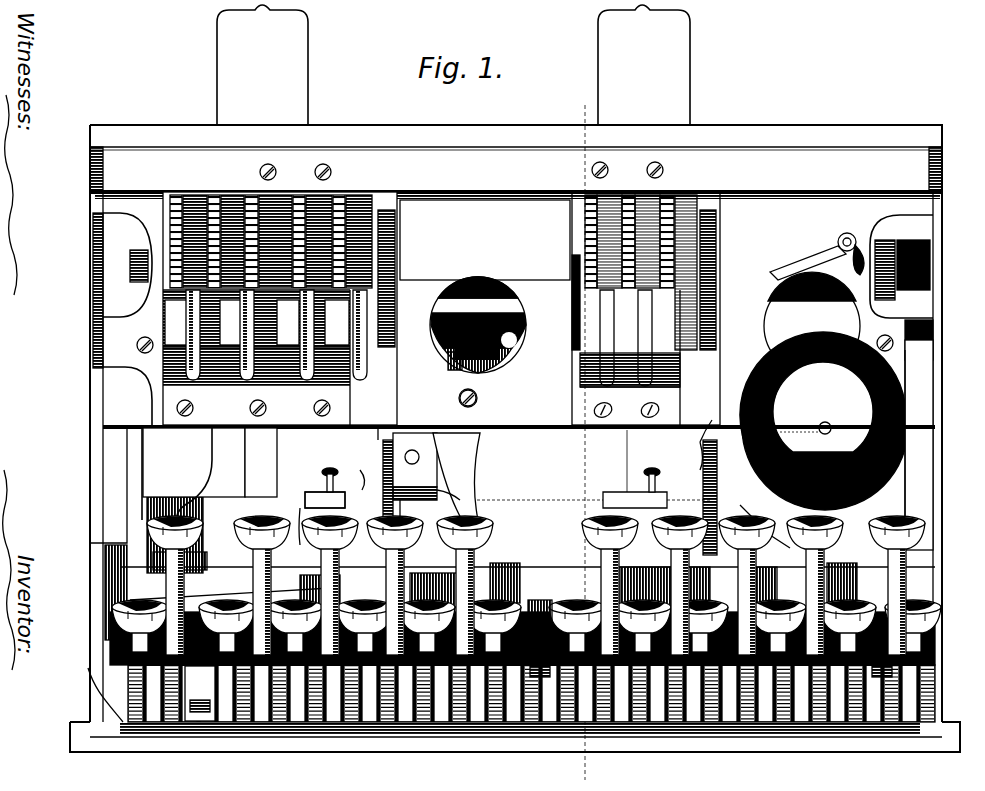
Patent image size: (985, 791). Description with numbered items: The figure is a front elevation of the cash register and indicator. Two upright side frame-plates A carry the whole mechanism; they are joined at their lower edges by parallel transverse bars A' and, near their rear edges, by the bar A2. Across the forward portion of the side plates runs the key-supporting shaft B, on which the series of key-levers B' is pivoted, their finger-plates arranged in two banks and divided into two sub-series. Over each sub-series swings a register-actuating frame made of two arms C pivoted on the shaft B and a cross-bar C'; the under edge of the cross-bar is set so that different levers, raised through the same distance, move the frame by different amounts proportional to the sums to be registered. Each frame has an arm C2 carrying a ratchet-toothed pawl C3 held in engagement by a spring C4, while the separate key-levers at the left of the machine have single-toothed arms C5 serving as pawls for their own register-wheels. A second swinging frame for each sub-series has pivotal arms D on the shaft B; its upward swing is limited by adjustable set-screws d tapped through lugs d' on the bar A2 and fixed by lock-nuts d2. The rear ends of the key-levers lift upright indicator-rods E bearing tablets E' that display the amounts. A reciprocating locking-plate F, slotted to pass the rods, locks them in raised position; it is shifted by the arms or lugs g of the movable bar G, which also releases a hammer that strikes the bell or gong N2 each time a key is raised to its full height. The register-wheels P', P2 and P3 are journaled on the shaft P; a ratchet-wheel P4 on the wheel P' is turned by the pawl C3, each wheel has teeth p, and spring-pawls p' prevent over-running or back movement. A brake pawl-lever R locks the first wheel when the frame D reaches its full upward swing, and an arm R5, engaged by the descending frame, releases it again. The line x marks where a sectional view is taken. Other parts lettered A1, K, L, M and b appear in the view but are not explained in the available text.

The side frame-plates A is at (509, 423).
The transverse bars A' is at (515, 748).
The front plate A1 is at (485, 240).
The bar A2 is at (519, 517).
The key-supporting shaft B is at (518, 667).
The key-levers B' is at (449, 719).
The arms C is at (526, 618).
The cross-bar C' is at (536, 585).
The arm C2 is at (360, 472).
The ratchet-toothed pawl C3 is at (378, 440).
The spring C4 is at (411, 440).
The upwardly-extending arm C5 is at (143, 483).
The pivotal arms D is at (540, 612).
The indicator-rods E is at (426, 464).
The indicator plates or tablets E' is at (446, 67).
The locking-plate F is at (515, 315).
The movable bar G is at (476, 370).
The arms or lugs g is at (446, 356).
The latch L is at (510, 356).
The cam lever M is at (462, 488).
The bell or gong N2 is at (836, 441).
The spring bracket K is at (658, 385).
The shaft P is at (478, 320).
The register-wheel P' is at (440, 297).
The register-wheel P2 is at (314, 200).
The register-wheel P3 is at (259, 200).
The ratchet-wheel P4 is at (393, 256).
The teeth p is at (440, 259).
The spring-pawls p' is at (448, 341).
The guide bar b is at (585, 220).
The set-screws d is at (476, 469).
The lock-nut d2 is at (318, 498).
The lugs d' is at (447, 519).
The pawl-lever R is at (420, 487).
The arm R5 is at (412, 515).
The section line x is at (572, 441).